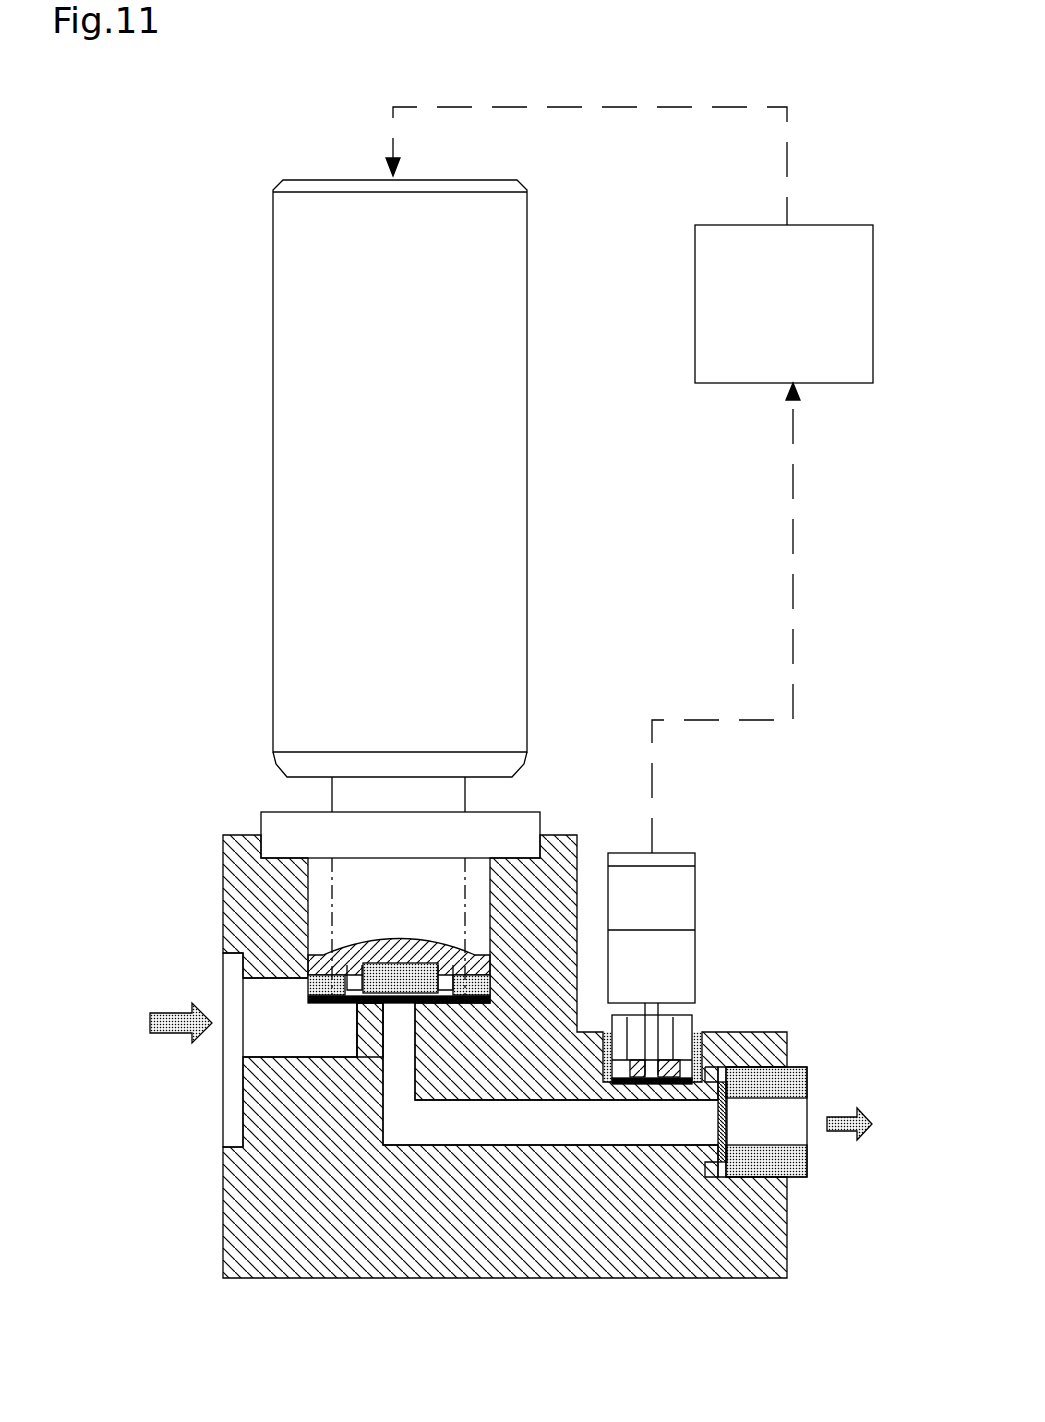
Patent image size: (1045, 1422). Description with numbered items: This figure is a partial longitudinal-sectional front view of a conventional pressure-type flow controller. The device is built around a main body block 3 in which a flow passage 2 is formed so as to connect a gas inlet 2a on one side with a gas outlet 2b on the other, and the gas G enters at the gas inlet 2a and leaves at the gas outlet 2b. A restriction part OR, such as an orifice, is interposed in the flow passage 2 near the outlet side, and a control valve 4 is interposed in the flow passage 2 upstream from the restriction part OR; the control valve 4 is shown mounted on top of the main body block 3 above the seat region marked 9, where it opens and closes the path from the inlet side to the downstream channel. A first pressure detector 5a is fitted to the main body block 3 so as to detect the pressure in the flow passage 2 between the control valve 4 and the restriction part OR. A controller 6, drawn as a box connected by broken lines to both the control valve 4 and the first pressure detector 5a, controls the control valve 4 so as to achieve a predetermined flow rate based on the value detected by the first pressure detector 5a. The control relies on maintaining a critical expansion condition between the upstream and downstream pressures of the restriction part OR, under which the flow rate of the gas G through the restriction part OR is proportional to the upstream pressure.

The flow passage 2 is at (304, 1052).
The gas inlet 2a is at (242, 1012).
The gas outlet 2b is at (810, 1108).
The main body block 3 is at (245, 1222).
The control valve 4 is at (252, 694).
The first pressure detector 5a is at (704, 946).
The controller 6 is at (700, 357).
The valve seat 9 is at (358, 1020).
The restriction part OR is at (727, 1122).
The gas G is at (514, 1073).